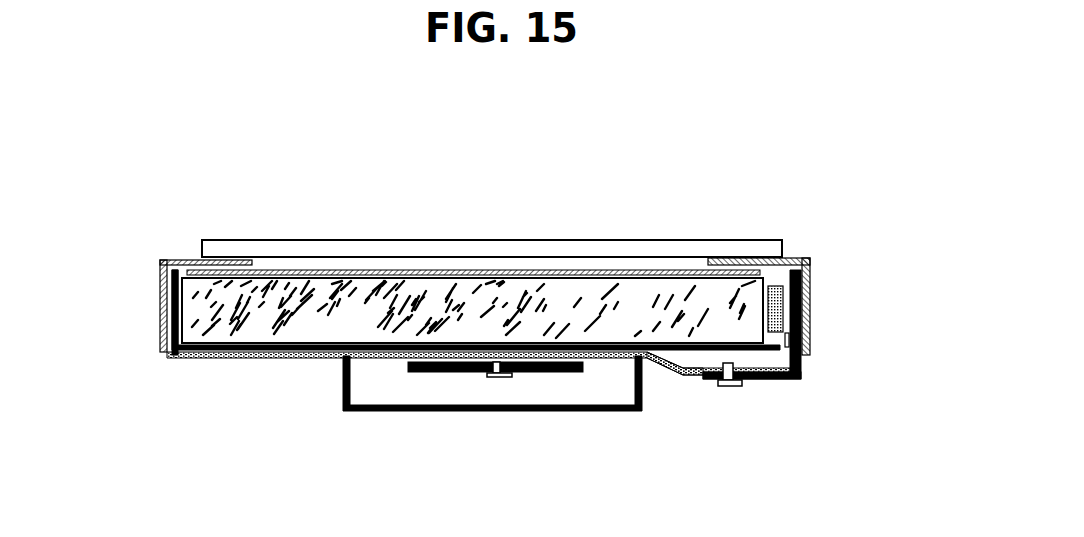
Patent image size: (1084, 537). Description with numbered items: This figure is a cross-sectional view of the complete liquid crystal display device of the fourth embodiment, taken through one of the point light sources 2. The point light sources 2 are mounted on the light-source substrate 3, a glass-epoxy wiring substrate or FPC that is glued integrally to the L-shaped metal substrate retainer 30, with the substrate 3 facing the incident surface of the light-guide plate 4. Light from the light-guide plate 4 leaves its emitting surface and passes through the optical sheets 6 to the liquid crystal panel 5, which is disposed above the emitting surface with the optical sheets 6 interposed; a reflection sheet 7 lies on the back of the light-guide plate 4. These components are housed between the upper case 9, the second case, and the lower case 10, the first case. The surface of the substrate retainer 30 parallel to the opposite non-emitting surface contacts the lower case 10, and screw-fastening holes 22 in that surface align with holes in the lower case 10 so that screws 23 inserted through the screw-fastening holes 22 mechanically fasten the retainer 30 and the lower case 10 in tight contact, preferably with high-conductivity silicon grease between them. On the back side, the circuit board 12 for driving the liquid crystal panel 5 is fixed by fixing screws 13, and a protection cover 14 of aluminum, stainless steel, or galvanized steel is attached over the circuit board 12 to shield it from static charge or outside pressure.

The point light source 2 is at (803, 268).
The light-source substrate 3 is at (803, 315).
The light-guide plate 4 is at (340, 282).
The liquid crystal panel 5 is at (652, 240).
The optical sheets 6 is at (465, 270).
The reflection sheet 7 is at (181, 359).
The upper case 9 is at (163, 258).
The lower case 10 is at (257, 360).
The circuit board 12 is at (408, 372).
The fixing screw 13 is at (497, 380).
The protection cover 14 is at (342, 410).
The screw-fastening hole 22 is at (695, 385).
The screw 23 is at (730, 390).
The substrate retainer 30 is at (803, 380).